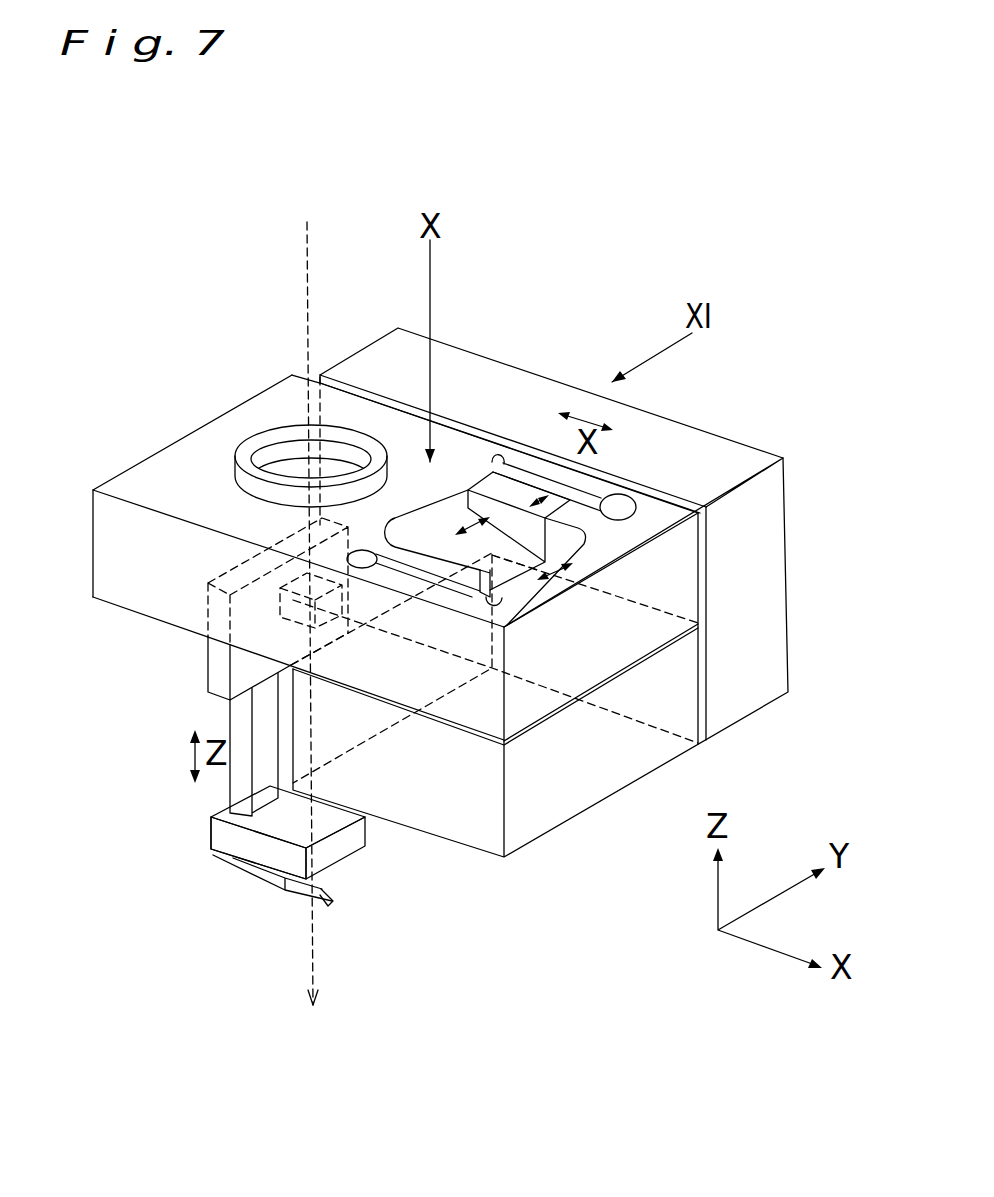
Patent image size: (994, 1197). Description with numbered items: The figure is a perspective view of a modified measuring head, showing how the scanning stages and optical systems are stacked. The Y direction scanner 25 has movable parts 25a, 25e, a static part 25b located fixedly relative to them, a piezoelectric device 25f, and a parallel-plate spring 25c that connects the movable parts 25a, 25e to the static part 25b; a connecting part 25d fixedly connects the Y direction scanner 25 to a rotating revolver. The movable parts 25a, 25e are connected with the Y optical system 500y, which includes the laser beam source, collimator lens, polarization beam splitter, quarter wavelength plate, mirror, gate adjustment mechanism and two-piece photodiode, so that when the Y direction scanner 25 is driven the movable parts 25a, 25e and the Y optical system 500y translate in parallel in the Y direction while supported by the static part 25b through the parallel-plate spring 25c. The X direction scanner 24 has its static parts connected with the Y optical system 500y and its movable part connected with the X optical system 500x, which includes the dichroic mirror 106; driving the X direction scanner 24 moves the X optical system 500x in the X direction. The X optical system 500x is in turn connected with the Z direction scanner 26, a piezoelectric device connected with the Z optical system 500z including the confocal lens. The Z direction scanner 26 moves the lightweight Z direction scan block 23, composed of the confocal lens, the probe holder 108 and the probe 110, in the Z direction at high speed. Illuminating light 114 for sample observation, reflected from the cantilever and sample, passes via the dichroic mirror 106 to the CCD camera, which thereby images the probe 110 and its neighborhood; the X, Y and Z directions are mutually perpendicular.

The Z direction scan block 23 is at (197, 838).
The X direction scanner 24 is at (793, 557).
The Y direction scanner 25 is at (572, 505).
The movable part 25a is at (650, 522).
The static part 25b is at (177, 473).
The parallel-plate spring 25c is at (537, 465).
The connecting part 25d is at (280, 465).
The movable part 25e is at (600, 633).
The piezoelectric device 25f is at (497, 517).
The Z direction scanner 26 is at (242, 770).
The dichroic mirror 106 is at (297, 608).
The probe holder 108 is at (265, 882).
The probe 110 is at (324, 903).
The illuminating light 114 is at (307, 250).
The X optical system 500x is at (225, 672).
The Y optical system 500y is at (557, 813).
The Z optical system 500z is at (230, 843).